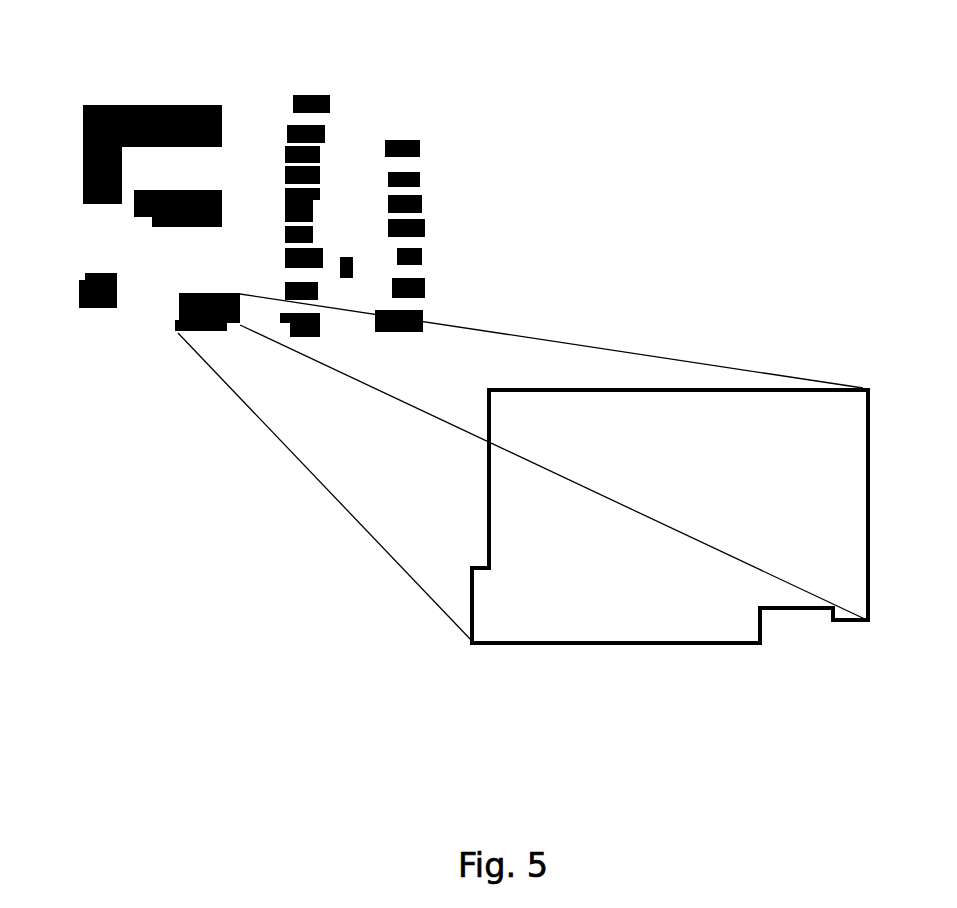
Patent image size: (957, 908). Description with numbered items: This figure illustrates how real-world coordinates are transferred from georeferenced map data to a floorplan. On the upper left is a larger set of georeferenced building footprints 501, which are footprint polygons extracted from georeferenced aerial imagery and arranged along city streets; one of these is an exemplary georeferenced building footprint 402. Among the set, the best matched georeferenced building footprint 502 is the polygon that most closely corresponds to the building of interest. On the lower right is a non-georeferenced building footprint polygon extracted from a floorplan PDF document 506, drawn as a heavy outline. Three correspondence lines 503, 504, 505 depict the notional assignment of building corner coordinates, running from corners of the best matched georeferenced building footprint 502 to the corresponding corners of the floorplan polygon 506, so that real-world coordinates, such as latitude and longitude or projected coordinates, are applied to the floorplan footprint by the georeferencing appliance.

The set of georeferenced building footprints 501 is at (455, 188).
The georeferenced building footprint 402 is at (152, 144).
The best matched georeferenced building footprint 502 is at (207, 294).
The notional assignment of building corner coordinates 503 is at (325, 487).
The notional assignment of building corner coordinates 504 is at (553, 472).
The notional assignment of building corner coordinates 505 is at (551, 341).
The non-georeferenced building footprint polygon extracted from a floorplan PDF docu 506 is at (630, 564).